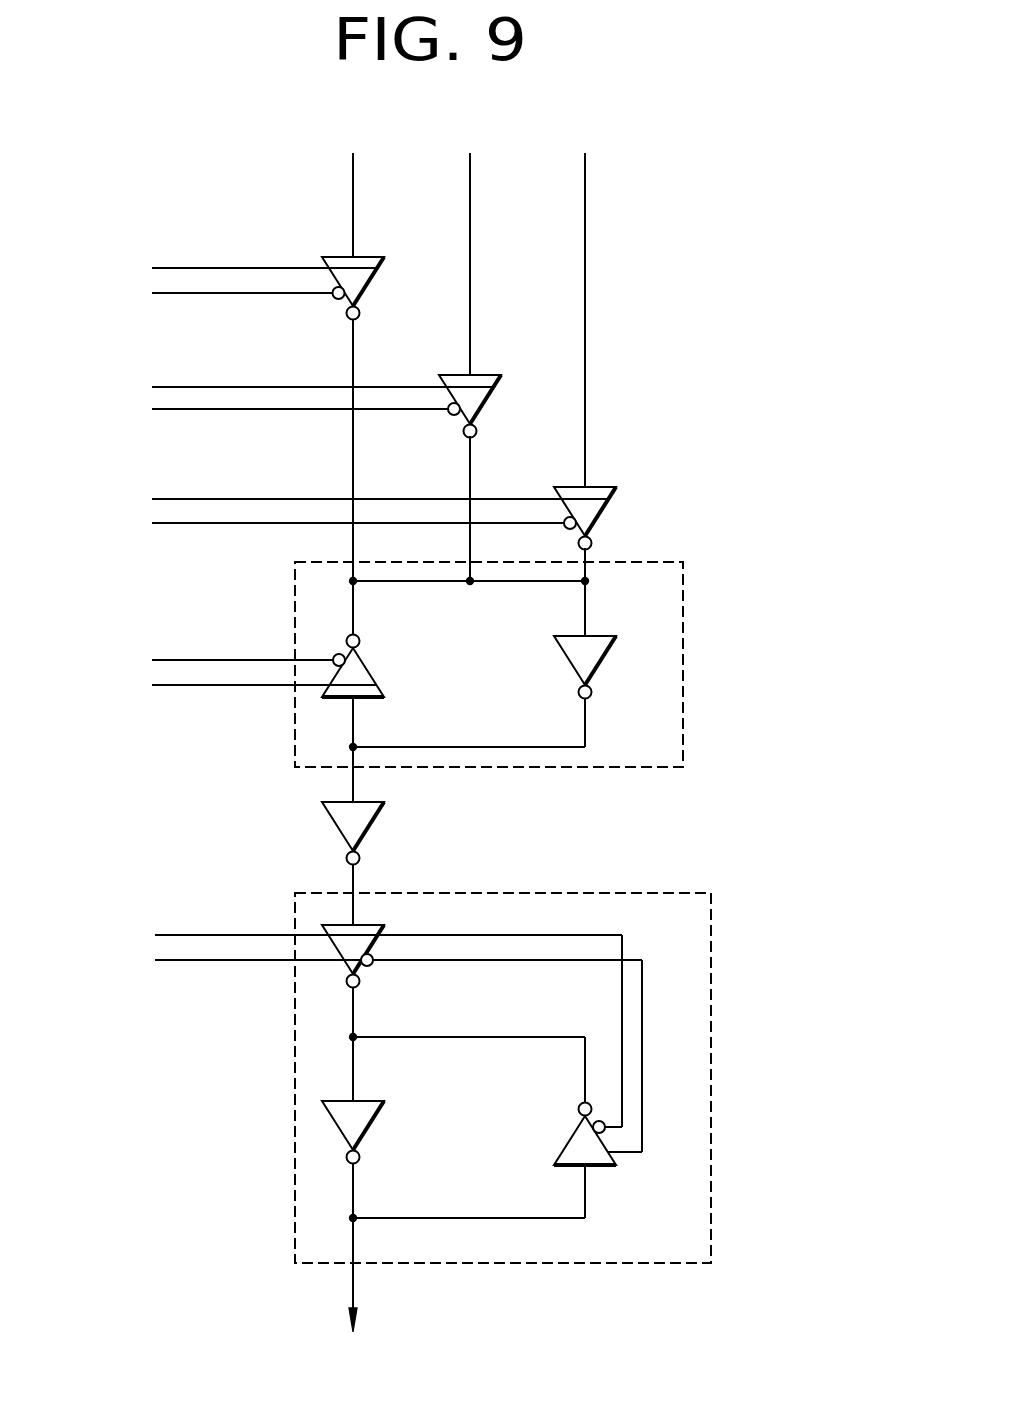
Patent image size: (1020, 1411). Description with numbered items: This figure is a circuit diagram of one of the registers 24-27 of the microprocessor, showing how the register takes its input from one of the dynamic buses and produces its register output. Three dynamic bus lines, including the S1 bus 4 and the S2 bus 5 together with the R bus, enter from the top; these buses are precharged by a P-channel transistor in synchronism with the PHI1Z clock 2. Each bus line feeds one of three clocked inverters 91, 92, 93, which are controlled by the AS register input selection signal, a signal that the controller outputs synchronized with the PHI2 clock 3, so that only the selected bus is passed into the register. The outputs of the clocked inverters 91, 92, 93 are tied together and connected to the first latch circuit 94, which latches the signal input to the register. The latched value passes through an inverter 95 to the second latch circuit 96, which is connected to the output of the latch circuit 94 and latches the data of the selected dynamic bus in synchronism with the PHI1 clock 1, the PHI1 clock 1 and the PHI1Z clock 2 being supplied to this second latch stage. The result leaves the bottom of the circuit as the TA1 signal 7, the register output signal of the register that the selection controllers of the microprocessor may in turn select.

The PHI1 clock 1 is at (207, 933).
The PHI1Z clock 2 is at (220, 960).
The PHI2 clock 3 is at (353, 195).
The S1 bus 4 is at (470, 195).
The S2 bus 5 is at (585, 205).
The TA1 signal 7 is at (355, 1295).
The registers 24-27 is at (243, 233).
The clocked inverter 91 is at (378, 262).
The clocked inverter 92 is at (483, 373).
The clocked inverter 93 is at (598, 486).
The latch circuit 94 is at (683, 683).
The inverter 95 is at (380, 813).
The latch circuit 96 is at (711, 1087).